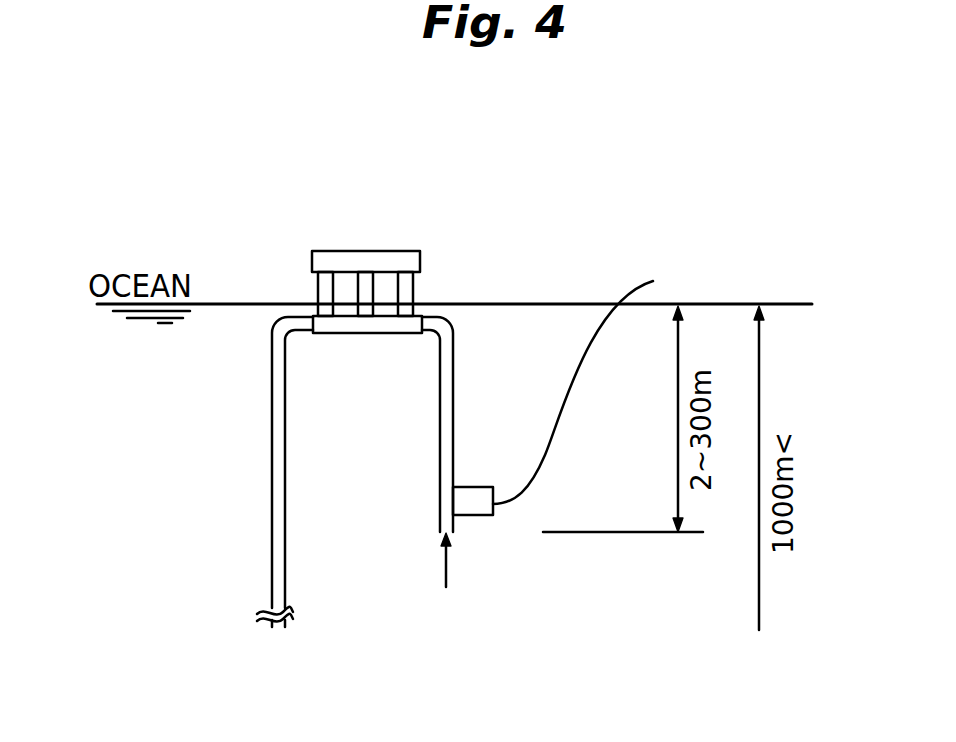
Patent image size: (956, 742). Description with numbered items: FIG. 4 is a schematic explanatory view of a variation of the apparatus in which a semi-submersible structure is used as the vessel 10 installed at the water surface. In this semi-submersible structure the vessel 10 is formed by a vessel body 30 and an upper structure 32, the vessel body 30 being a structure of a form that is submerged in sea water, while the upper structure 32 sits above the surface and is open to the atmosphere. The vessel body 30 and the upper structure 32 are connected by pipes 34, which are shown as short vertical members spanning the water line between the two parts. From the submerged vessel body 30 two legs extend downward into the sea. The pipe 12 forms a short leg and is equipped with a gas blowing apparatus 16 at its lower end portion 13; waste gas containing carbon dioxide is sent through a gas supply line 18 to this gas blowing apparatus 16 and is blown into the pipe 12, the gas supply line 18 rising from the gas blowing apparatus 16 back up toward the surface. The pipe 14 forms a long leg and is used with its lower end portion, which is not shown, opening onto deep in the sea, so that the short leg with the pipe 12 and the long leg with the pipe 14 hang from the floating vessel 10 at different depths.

The vessel 10 is at (376, 288).
The pipe forming a short leg 12 is at (448, 400).
The lower end portion 13 is at (434, 514).
The pipe forming a long leg 14 is at (277, 457).
The gas blowing apparatus 16 is at (468, 498).
The gas supply line 18 is at (563, 420).
The vessel body 30 is at (372, 334).
The upper structure 32 is at (331, 263).
The pipes 34 is at (367, 284).